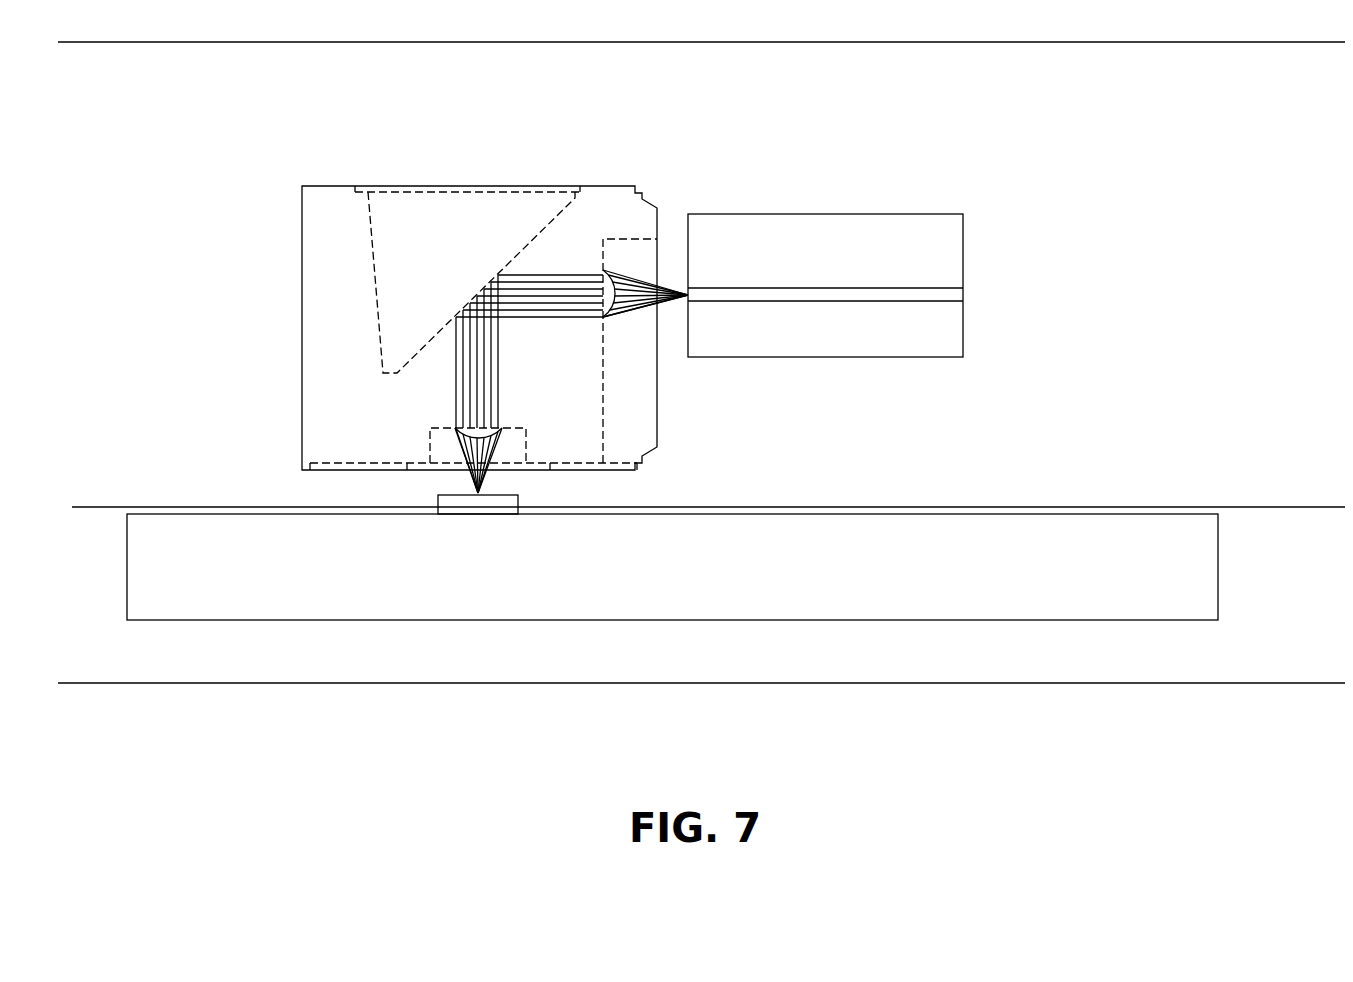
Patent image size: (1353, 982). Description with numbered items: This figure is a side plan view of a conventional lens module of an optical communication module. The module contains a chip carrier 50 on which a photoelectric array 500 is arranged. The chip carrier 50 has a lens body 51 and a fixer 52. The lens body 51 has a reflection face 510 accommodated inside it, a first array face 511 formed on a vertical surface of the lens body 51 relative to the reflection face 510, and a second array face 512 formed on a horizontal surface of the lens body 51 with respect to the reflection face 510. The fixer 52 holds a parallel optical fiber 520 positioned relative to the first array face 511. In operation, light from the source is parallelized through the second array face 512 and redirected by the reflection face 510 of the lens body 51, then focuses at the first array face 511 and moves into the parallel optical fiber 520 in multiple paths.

The chip carrier 50 is at (1125, 533).
The photoelectric array 500 is at (460, 507).
The lens body 51 is at (318, 324).
The reflection face 510 is at (533, 238).
The first array face 511 is at (605, 317).
The second array face 512 is at (502, 428).
The fixer 52 is at (910, 243).
The parallel optical fiber 520 is at (784, 297).